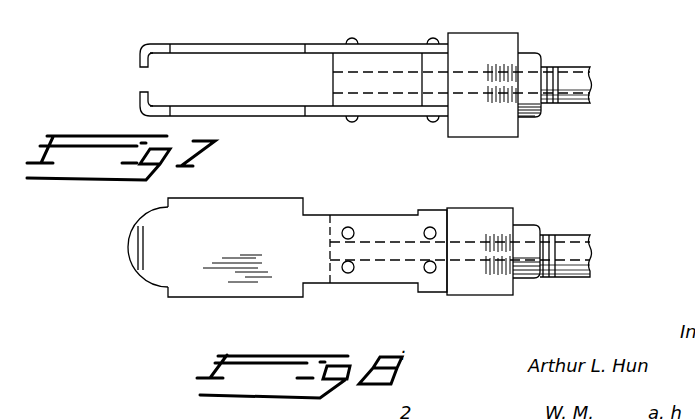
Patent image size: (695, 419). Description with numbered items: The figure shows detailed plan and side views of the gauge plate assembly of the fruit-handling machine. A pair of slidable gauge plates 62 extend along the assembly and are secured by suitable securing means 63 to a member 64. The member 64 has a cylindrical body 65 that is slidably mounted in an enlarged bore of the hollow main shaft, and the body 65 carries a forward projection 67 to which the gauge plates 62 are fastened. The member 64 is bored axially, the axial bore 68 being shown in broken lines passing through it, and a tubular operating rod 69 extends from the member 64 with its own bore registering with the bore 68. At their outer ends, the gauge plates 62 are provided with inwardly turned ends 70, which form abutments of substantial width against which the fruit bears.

In FIG. 7, the gauge plates 62 is at (242, 106).
In FIG. 8, the gauge plates 62 is at (228, 231).
In FIG. 7, the securing means 63 is at (433, 124).
In FIG. 8, the securing means 63 is at (428, 227).
In FIG. 7, the member 64 is at (386, 97).
In FIG. 7, the cylindrical body 65 is at (482, 42).
In FIG. 8, the cylindrical body 65 is at (467, 220).
In FIG. 7, the forward projection 67 is at (375, 67).
In FIG. 7, the axial bore 68 is at (408, 86).
In FIG. 8, the axial bore 68 is at (373, 262).
In FIG. 7, the tubular operating rod 69 is at (577, 90).
In FIG. 8, the tubular operating rod 69 is at (561, 243).
In FIG. 7, the inwardly turned ends 70 is at (140, 62).
In FIG. 8, the inwardly turned ends 70 is at (137, 255).